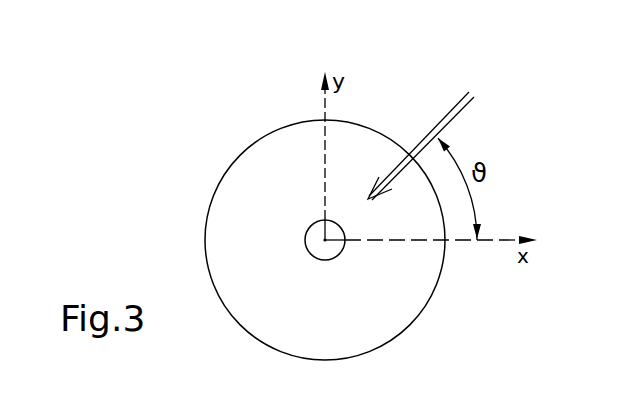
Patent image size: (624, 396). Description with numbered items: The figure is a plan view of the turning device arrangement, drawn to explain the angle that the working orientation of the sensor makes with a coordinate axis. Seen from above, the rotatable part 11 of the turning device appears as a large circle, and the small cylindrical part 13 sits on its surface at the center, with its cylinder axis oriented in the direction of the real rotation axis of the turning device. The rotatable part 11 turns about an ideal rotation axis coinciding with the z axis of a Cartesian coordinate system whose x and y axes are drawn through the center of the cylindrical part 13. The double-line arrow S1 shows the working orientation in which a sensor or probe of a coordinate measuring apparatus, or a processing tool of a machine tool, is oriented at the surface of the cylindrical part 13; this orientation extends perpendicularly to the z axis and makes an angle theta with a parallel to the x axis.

The rotatable part 11 is at (205, 232).
The cylindrical part 13 is at (306, 234).
The double-line arrow S1 is at (476, 104).